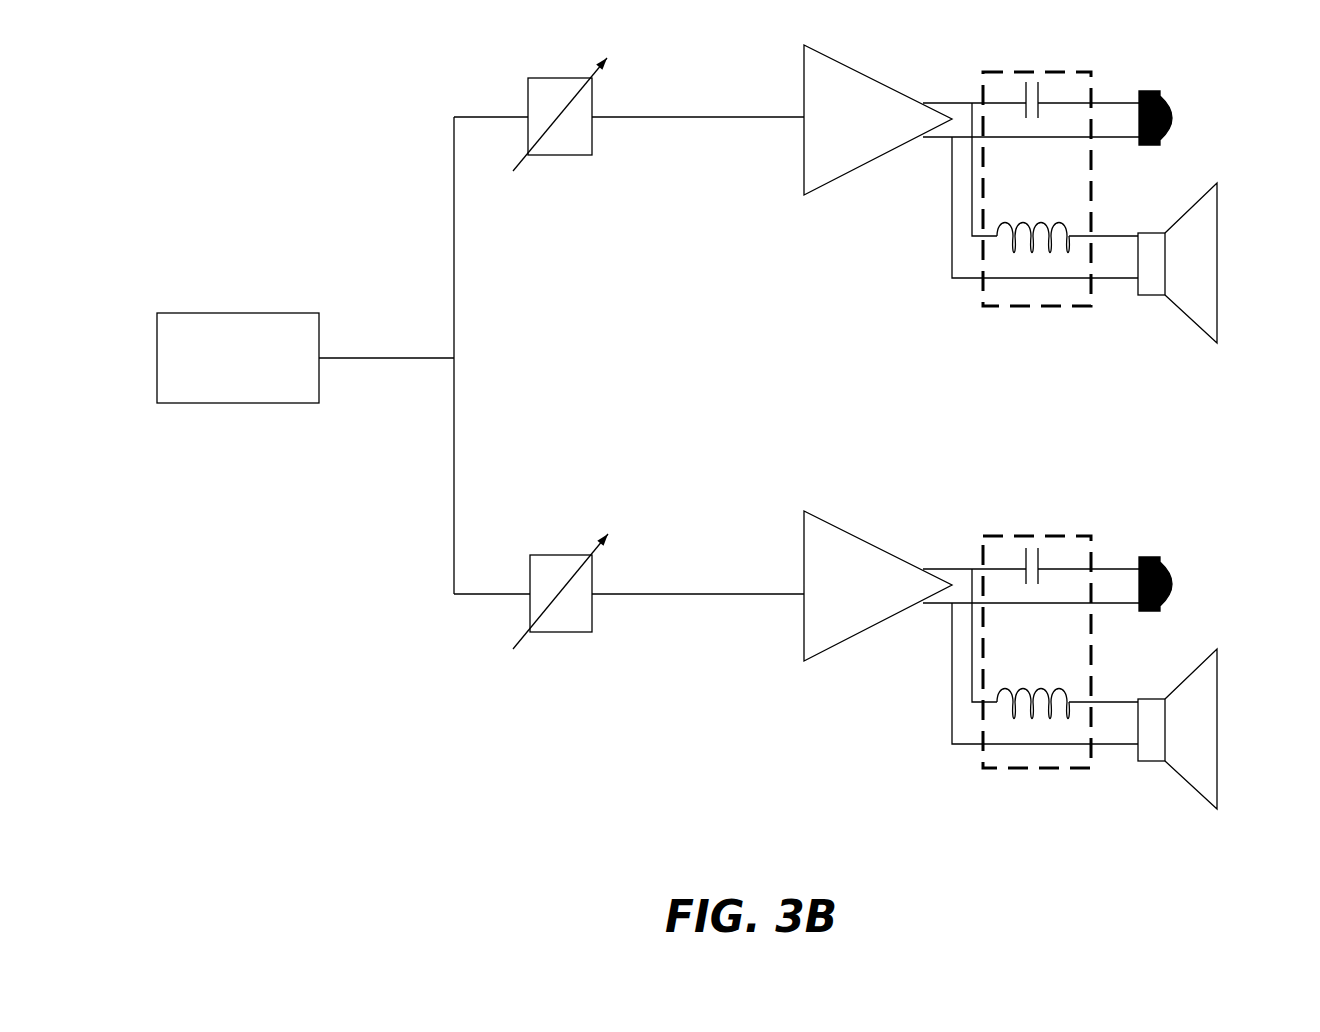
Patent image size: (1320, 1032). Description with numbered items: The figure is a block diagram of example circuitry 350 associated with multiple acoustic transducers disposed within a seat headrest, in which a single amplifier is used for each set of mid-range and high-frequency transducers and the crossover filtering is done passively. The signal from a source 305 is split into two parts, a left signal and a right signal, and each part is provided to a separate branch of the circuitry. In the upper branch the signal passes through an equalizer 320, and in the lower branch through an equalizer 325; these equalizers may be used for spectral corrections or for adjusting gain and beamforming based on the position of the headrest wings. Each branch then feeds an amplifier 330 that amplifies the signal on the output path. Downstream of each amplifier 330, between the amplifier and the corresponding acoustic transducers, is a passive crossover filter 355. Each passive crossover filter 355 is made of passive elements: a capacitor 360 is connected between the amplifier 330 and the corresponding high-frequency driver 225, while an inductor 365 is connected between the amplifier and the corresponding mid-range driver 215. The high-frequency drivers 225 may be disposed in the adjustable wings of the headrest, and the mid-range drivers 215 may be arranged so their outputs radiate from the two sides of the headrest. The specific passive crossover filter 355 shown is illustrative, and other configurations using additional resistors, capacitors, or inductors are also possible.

The circuitry 350 is at (387, 117).
The source 305 is at (238, 358).
The equalizer 320 is at (560, 130).
The equalizer 325 is at (560, 606).
The amplifier 330 is at (772, 360).
The passive crossover filter 355 is at (1053, 308).
The capacitor 360 is at (1055, 90).
The inductor 365 is at (1012, 252).
The high-frequency driver 225 is at (1185, 351).
The mid-range driver 215 is at (1211, 496).